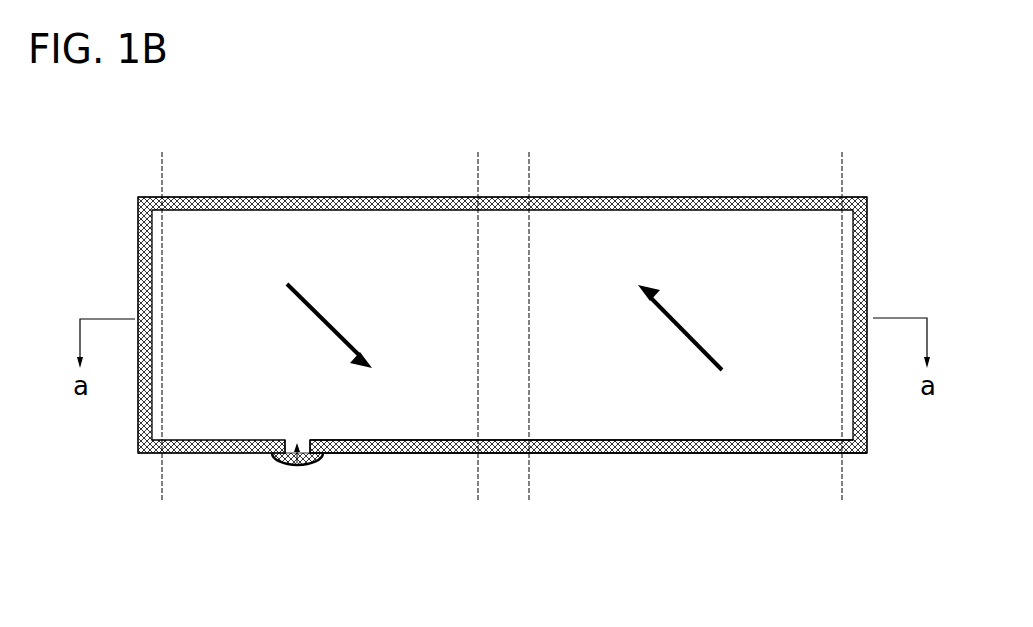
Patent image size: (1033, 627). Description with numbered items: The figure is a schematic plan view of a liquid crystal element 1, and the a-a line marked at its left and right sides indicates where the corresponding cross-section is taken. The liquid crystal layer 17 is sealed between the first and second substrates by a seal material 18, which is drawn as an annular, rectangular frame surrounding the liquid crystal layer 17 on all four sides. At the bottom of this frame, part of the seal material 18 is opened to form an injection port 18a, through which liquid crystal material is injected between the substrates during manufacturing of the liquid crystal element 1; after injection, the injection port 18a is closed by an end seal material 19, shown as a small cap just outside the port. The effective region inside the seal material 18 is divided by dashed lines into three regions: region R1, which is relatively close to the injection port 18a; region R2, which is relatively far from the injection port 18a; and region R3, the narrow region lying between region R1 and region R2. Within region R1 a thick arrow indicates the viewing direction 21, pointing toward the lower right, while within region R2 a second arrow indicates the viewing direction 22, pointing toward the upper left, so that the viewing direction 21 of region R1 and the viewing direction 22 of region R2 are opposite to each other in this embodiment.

The liquid crystal element 1 is at (512, 612).
The liquid crystal layer 17 is at (707, 420).
The seal material 18 is at (866, 258).
The injection port 18a is at (292, 468).
The end seal material 19 is at (298, 468).
The viewing direction 21 is at (322, 326).
The viewing direction 22 is at (682, 332).
The region R1 is at (478, 160).
The region R2 is at (842, 160).
The region R3 is at (529, 160).